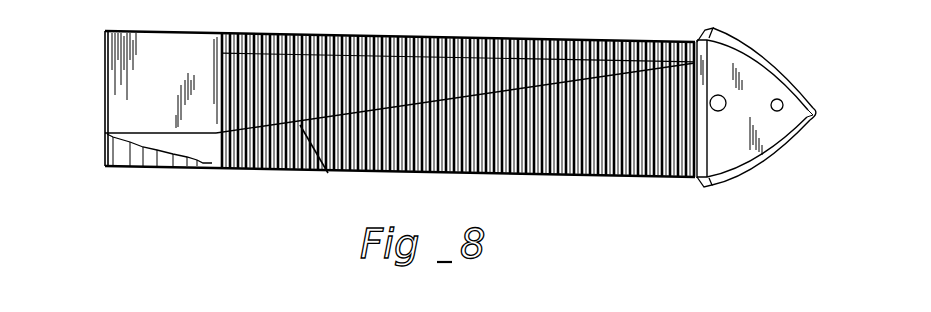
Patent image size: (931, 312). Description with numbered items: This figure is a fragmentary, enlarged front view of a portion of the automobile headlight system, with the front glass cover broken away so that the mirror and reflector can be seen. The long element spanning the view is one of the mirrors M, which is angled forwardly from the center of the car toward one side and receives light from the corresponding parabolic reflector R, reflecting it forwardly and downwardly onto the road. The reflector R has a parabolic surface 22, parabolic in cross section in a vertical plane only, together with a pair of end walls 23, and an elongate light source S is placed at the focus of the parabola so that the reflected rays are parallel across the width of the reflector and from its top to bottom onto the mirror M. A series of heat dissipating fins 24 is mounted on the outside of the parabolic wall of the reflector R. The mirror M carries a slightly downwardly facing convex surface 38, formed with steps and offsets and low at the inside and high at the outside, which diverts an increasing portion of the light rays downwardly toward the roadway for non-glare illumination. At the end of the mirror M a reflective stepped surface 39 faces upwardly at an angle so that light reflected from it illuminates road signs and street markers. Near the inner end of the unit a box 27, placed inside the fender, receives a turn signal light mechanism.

The box 27 is at (107, 48).
The mirror M is at (494, 32).
The convex surface 38 is at (328, 173).
The reflective stepped surface 39 is at (163, 165).
The end wall 23 is at (736, 141).
The heat dissipating fin 24 is at (783, 55).
The parabolic surface 22 is at (813, 100).
The light source S is at (780, 112).
The parabolic reflector R is at (770, 87).